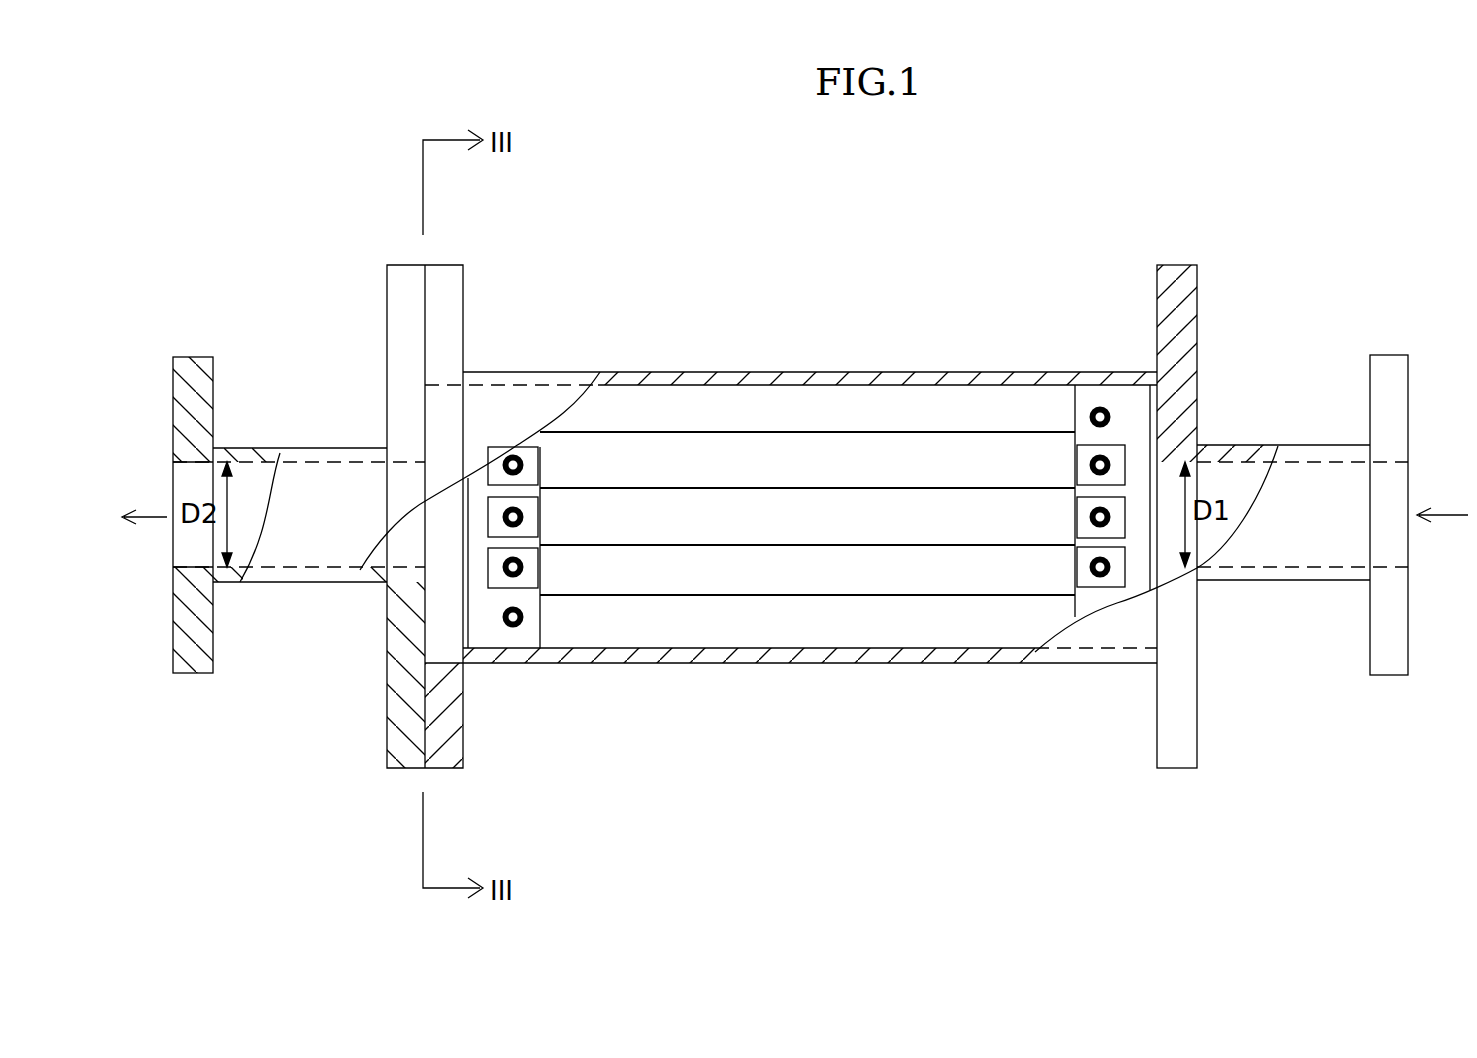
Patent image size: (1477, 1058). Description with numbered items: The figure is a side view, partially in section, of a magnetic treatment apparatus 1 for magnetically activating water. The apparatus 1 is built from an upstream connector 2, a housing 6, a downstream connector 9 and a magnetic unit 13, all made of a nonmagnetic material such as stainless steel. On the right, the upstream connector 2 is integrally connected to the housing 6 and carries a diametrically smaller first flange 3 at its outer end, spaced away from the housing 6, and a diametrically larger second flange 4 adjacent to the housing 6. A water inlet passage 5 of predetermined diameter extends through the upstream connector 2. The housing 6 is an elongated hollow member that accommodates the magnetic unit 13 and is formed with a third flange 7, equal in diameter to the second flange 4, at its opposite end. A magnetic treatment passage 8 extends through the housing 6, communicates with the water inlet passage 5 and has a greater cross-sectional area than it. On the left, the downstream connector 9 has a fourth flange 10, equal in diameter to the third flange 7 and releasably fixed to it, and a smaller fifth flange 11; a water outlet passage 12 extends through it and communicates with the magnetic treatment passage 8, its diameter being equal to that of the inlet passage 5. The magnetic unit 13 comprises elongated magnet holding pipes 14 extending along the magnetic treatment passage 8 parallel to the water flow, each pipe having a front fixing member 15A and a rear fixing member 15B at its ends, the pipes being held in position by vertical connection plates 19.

The magnetic treatment apparatus 1 is at (723, 323).
The upstream connector 2 is at (1272, 580).
The first flange 3 is at (1410, 378).
The second flange 4 is at (1197, 322).
The water inlet passage 5 is at (1227, 475).
The housing 6 is at (835, 667).
The third flange 7 is at (464, 323).
The magnetic treatment passage 8 is at (960, 575).
The downstream connector 9 is at (290, 583).
The fourth flange 10 is at (385, 331).
The fifth flange 11 is at (172, 588).
The water outlet passage 12 is at (248, 480).
The magnetic unit 13 is at (660, 630).
The magnet holding pipes 14 is at (925, 510).
The front fixing member 15A is at (1120, 513).
The rear fixing member 15B is at (540, 523).
The vertical connection plates 19 is at (487, 623).